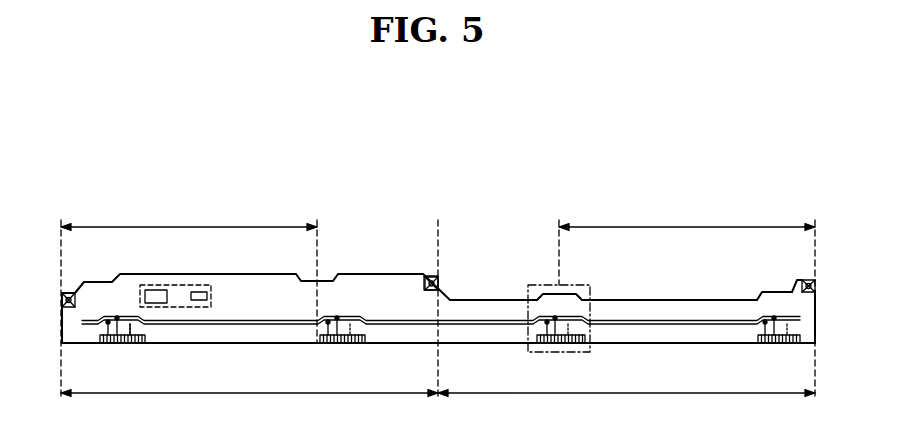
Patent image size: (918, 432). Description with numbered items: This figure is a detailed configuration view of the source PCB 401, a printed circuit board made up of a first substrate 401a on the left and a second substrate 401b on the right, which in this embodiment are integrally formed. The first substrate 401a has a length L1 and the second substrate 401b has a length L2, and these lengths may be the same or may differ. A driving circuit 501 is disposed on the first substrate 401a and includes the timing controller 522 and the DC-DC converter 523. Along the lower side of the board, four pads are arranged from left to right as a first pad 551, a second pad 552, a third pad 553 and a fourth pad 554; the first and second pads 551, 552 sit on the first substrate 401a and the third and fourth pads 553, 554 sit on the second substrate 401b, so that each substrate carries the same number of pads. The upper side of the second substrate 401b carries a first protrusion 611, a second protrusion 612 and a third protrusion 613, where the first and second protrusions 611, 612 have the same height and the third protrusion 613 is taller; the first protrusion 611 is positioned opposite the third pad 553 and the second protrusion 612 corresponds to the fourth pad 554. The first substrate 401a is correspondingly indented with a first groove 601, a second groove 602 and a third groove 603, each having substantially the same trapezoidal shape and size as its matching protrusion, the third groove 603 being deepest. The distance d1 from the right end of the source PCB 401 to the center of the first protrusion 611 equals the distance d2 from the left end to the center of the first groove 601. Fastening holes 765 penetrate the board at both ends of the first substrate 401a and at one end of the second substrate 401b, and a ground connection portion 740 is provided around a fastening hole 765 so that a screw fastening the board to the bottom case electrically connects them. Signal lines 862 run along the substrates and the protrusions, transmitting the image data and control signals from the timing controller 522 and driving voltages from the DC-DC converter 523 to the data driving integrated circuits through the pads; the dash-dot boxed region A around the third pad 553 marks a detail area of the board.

The source PCB 401 is at (108, 187).
The first substrate 401a is at (228, 343).
The second substrate 401b is at (675, 343).
The driving circuit 501 is at (211, 296).
The timing controller 522 is at (155, 290).
The DC-DC converter 523 is at (198, 292).
The first pad 551 is at (145, 343).
The second pad 552 is at (318, 340).
The third pad 553 is at (537, 343).
The fourth pad 554 is at (760, 336).
The first groove 601 is at (326, 275).
The second groove 602 is at (100, 281).
The third groove 603 is at (70, 288).
The first protrusion 611 is at (548, 296).
The second protrusion 612 is at (773, 294).
The third protrusion 613 is at (790, 290).
The ground connection portion 740 is at (430, 277).
The fastening hole 765 is at (62, 302).
The signal lines 862 is at (92, 332).
The region A is at (590, 338).
The distance d1 is at (687, 216).
The distance d2 is at (189, 216).
The length L1 is at (249, 405).
The length L2 is at (626, 405).